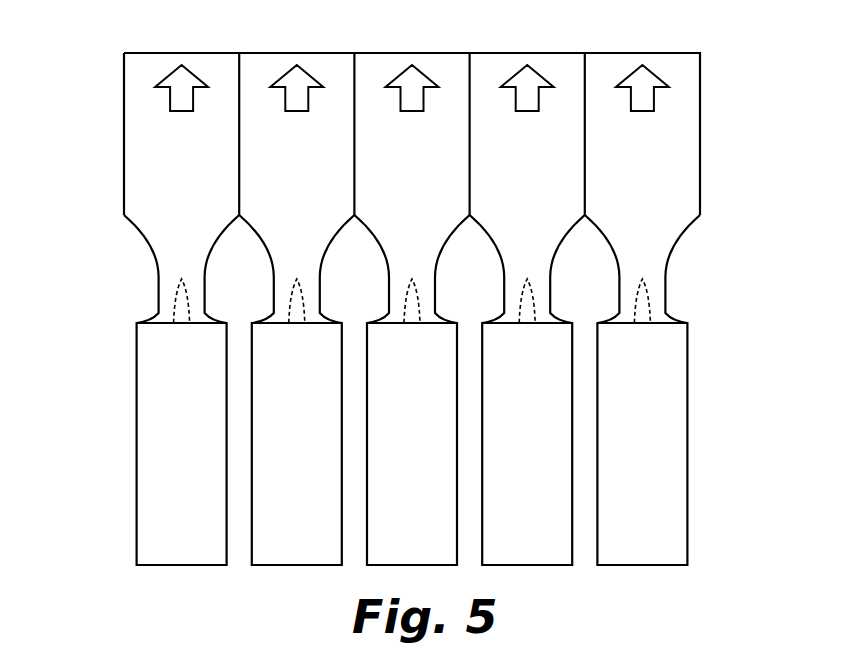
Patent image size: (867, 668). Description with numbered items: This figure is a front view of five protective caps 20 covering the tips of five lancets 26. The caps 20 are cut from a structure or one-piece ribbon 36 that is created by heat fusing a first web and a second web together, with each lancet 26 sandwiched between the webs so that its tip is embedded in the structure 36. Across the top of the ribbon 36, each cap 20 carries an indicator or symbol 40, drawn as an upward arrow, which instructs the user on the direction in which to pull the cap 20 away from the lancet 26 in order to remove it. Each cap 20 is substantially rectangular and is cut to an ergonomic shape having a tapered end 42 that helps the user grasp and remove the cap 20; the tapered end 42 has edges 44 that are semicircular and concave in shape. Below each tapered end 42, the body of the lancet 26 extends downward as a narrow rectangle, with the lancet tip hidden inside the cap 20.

The protective cap 20 is at (636, 53).
The structure or one-piece ribbon 36 is at (124, 132).
The indicator or symbol 40 is at (181, 80).
The tapered end 42 is at (650, 258).
The edges 44 is at (666, 281).
The lancet 26 is at (137, 468).